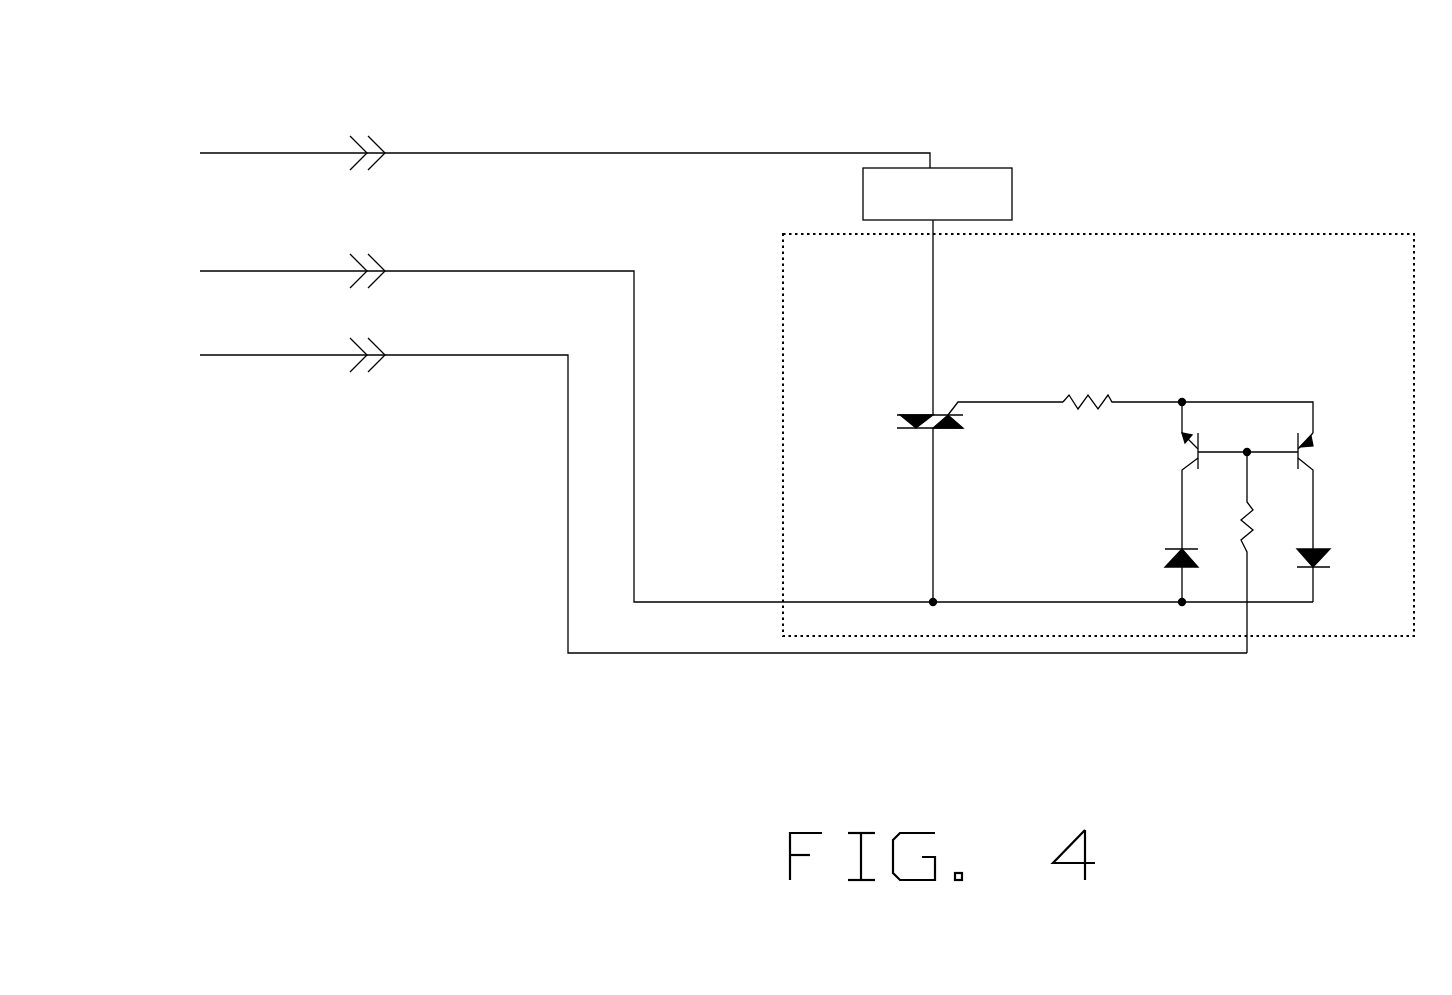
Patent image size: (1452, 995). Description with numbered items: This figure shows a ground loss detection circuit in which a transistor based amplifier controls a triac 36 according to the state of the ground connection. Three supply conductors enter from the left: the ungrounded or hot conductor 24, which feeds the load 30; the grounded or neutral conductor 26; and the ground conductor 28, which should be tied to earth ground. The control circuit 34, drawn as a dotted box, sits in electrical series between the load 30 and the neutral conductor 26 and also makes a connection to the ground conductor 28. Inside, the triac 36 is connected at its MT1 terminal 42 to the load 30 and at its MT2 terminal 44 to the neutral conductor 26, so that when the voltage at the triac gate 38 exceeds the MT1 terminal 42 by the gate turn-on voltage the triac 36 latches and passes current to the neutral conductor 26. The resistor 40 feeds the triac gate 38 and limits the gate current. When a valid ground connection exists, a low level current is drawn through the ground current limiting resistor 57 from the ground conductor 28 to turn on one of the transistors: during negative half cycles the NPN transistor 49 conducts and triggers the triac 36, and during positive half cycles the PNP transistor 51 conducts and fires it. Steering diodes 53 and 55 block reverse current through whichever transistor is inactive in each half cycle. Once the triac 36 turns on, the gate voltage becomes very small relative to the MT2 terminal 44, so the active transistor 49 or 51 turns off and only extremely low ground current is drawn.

The ungrounded conductor 24 is at (514, 138).
The grounded conductor 26 is at (482, 256).
The ground conductor 28 is at (466, 338).
The load 30 is at (1028, 185).
The control circuit 34 is at (1297, 216).
The triac 36 is at (881, 420).
The triac gate 38 is at (980, 387).
The resistor 40 is at (1079, 386).
The MT1 terminal 42 is at (915, 388).
The MT2 terminal 44 is at (915, 470).
The NPN transistor 49 is at (1178, 456).
The PNP transistor 51 is at (1318, 446).
The steering diode 53 is at (1158, 561).
The steering diode 55 is at (1340, 548).
The ground current limiting resistor 57 is at (1253, 512).